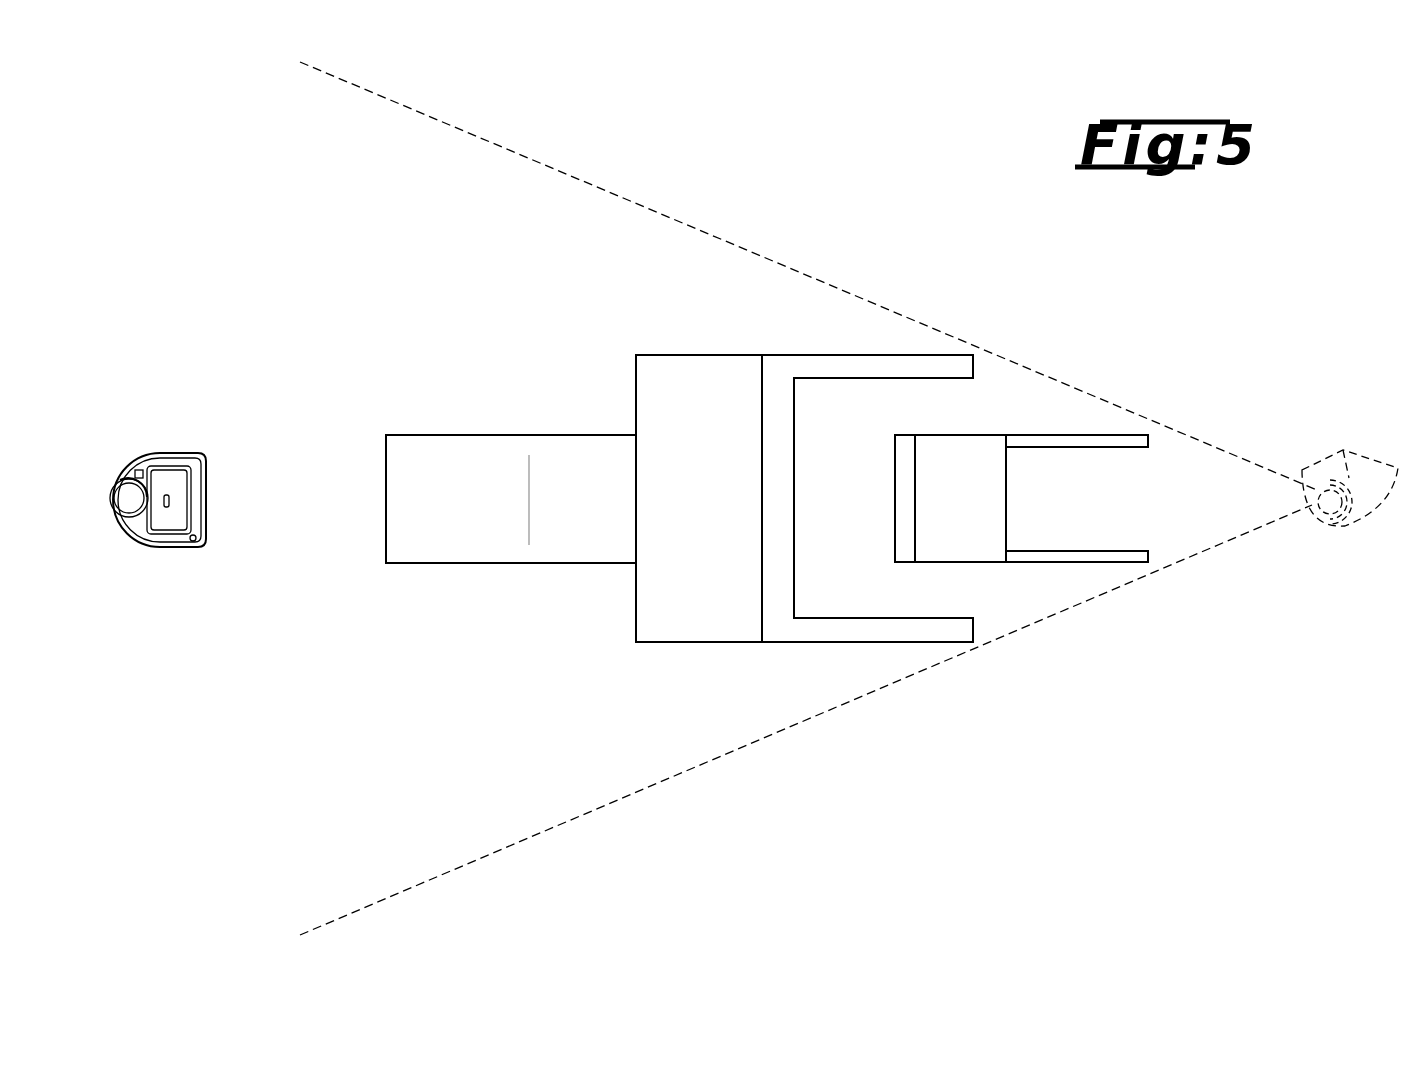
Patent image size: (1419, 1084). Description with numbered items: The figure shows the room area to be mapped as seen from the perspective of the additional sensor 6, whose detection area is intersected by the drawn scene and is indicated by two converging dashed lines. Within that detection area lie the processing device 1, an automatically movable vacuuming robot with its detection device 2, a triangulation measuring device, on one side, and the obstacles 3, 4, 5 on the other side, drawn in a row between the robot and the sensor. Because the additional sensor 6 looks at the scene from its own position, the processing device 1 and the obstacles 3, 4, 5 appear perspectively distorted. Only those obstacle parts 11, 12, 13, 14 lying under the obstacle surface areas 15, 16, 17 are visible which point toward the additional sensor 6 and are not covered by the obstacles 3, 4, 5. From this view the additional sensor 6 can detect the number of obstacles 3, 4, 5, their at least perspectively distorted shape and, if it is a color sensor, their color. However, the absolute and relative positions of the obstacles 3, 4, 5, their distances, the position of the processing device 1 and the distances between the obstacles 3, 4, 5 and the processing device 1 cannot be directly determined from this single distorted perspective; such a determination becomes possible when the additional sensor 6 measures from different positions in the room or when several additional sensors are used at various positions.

The processing device 1 is at (163, 437).
The detection device 2 is at (125, 503).
The obstacle 3 is at (473, 422).
The obstacle 4 is at (713, 342).
The obstacle 5 is at (960, 422).
The additional sensor 6 is at (1358, 455).
The obstacle part 11 is at (894, 367).
The obstacle part 12 is at (867, 633).
The obstacle part 13 is at (1060, 440).
The obstacle part 14 is at (1078, 557).
The obstacle surface area 15 is at (574, 537).
The obstacle surface area 16 is at (705, 612).
The obstacle surface area 17 is at (943, 545).